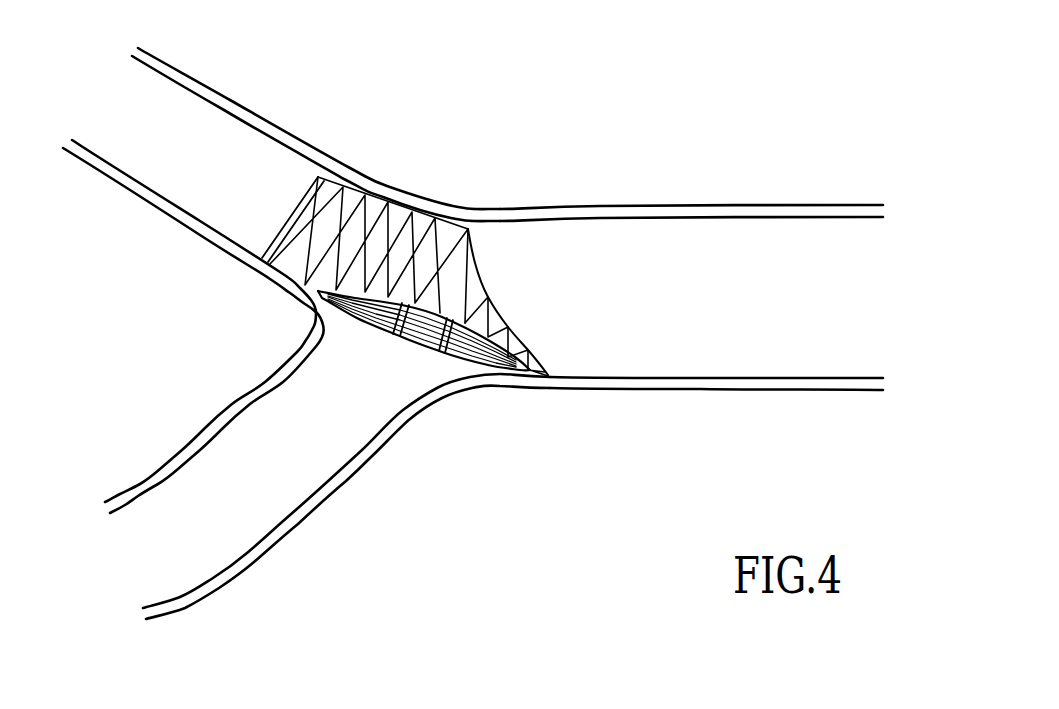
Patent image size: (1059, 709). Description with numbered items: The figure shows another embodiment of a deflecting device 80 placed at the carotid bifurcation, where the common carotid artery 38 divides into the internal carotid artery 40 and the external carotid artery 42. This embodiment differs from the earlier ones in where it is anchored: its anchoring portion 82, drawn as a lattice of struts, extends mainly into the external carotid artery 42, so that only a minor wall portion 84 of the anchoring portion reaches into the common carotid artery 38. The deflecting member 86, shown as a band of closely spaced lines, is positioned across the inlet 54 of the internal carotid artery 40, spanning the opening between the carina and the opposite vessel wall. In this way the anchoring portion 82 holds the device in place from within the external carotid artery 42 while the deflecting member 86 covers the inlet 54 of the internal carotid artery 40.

The common carotid artery 38 is at (645, 208).
The internal carotid artery 40 is at (299, 524).
The external carotid artery 42 is at (255, 114).
The inlet 54 is at (367, 348).
The deflecting device 80 is at (383, 198).
The anchoring portion 82 is at (358, 185).
The minor wall portion 84 is at (527, 373).
The deflecting member 86 is at (418, 338).